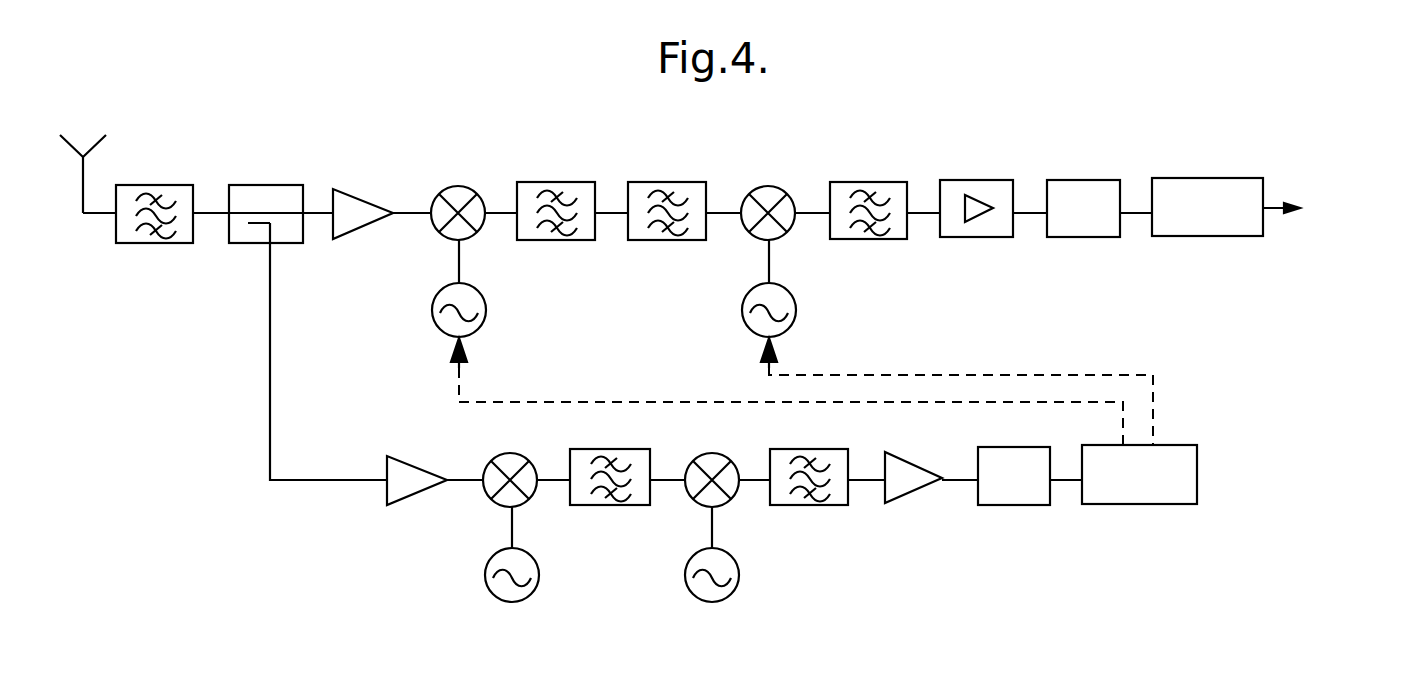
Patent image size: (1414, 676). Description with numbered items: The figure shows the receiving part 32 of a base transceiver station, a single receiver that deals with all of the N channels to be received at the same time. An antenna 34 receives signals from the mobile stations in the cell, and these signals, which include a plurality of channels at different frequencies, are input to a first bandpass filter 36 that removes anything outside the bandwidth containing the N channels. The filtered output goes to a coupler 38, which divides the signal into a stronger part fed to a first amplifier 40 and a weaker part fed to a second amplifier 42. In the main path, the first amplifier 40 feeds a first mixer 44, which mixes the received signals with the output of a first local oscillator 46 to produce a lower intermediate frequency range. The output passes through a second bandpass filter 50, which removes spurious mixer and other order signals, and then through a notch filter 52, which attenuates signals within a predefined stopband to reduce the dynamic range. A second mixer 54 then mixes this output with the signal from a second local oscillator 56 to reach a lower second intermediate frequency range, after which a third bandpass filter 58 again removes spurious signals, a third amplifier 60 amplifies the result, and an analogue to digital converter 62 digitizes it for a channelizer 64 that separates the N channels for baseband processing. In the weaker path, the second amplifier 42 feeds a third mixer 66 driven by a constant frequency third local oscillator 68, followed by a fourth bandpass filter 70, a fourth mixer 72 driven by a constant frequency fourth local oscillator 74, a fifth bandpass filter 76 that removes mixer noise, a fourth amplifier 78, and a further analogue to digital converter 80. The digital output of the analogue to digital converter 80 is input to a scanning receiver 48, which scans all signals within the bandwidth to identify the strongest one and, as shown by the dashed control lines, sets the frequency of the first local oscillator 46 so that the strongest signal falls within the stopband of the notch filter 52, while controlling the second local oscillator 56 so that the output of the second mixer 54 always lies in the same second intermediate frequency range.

The receiving part 32 is at (525, 128).
The antenna 34 is at (83, 178).
The first bandpass filter 36 is at (162, 185).
The coupler 38 is at (265, 185).
The first amplifier 40 is at (365, 192).
The second amplifier 42 is at (413, 500).
The first mixer 44 is at (463, 187).
The first local oscillator 46 is at (487, 315).
The scanning receiver 48 is at (1148, 504).
The second bandpass filter 50 is at (553, 182).
The notch filter 52 is at (665, 182).
The second mixer 54 is at (772, 187).
The second local oscillator 56 is at (797, 316).
The third bandpass filter 58 is at (860, 182).
The third amplifier 60 is at (975, 180).
The analogue to digital converter 62 is at (1082, 180).
The channelizer 64 is at (1215, 178).
The third mixer 66 is at (517, 455).
The third local oscillator 68 is at (539, 575).
The fourth bandpass filter 70 is at (613, 449).
The fourth mixer 72 is at (717, 453).
The fourth local oscillator 74 is at (739, 575).
The fifth bandpass filter 76 is at (812, 449).
The fourth amplifier 78 is at (913, 495).
The analogue to digital converter 80 is at (1015, 447).